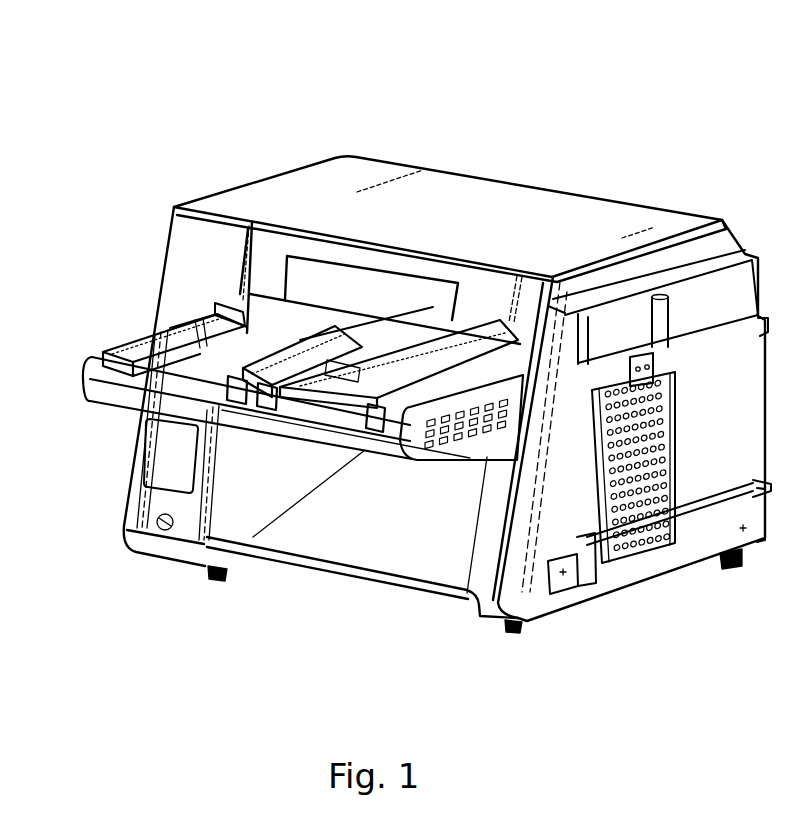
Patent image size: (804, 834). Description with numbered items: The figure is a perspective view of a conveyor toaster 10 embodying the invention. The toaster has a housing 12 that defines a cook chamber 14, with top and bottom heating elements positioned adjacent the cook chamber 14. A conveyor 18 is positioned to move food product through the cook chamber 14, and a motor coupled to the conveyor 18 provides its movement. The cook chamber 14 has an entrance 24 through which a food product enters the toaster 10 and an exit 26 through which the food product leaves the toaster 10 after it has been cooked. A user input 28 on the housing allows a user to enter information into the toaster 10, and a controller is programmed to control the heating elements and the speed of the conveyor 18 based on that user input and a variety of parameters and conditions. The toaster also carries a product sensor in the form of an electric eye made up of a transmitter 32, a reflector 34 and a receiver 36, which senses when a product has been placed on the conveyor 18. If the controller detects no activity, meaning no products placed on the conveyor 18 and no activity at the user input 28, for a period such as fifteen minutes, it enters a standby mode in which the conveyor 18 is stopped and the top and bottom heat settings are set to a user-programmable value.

The conveyor toaster 10 is at (578, 130).
The housing 12 is at (298, 197).
The cook chamber 14 is at (237, 310).
The conveyor 18 is at (258, 330).
The entrance 24 is at (478, 352).
The exit 26 is at (418, 489).
The user input 28 is at (167, 470).
The transmitter 32 is at (210, 330).
The reflector 34 is at (195, 330).
The receiver 36 is at (340, 390).